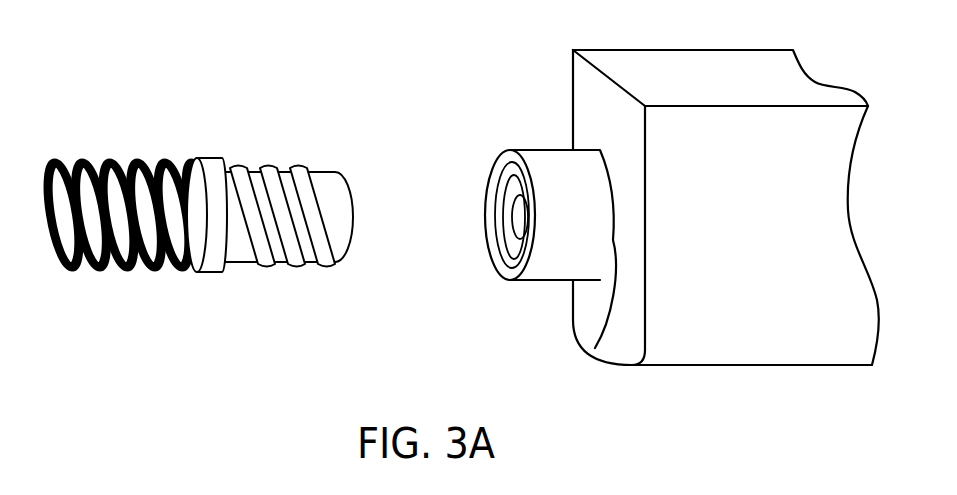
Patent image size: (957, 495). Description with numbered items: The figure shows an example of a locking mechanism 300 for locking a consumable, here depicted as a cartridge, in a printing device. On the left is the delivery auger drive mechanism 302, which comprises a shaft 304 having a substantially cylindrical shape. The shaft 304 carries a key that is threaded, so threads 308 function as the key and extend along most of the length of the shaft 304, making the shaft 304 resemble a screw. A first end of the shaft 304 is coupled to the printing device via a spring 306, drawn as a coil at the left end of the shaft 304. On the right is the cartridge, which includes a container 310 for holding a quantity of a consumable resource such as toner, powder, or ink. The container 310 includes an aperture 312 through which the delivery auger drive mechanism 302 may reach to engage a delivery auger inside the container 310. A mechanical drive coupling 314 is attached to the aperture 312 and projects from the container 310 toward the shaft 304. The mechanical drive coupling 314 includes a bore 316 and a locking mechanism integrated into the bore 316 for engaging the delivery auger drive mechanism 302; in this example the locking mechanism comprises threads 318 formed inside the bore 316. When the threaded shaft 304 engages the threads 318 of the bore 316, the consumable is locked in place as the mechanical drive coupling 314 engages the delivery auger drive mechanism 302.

The locking mechanism 300 is at (348, 60).
The delivery auger drive mechanism 302 is at (205, 132).
The shaft 304 is at (280, 168).
The spring 306 is at (58, 168).
The threads 308 is at (235, 168).
The container 310 is at (767, 234).
The aperture 312 is at (595, 348).
The mechanical drive coupling 314 is at (528, 130).
The bore 316 is at (478, 212).
The threads 318 is at (503, 280).